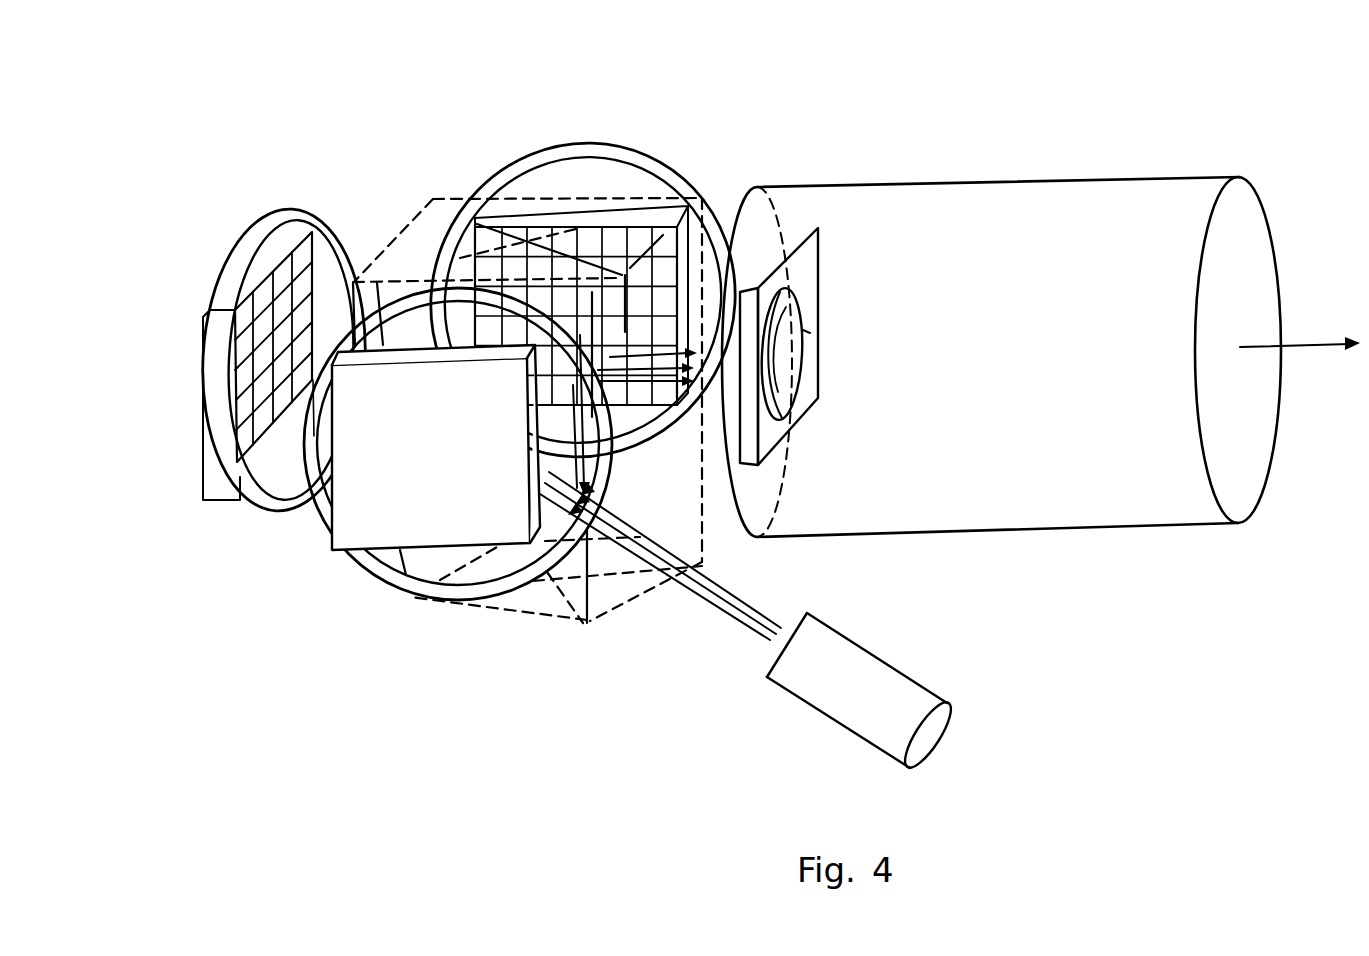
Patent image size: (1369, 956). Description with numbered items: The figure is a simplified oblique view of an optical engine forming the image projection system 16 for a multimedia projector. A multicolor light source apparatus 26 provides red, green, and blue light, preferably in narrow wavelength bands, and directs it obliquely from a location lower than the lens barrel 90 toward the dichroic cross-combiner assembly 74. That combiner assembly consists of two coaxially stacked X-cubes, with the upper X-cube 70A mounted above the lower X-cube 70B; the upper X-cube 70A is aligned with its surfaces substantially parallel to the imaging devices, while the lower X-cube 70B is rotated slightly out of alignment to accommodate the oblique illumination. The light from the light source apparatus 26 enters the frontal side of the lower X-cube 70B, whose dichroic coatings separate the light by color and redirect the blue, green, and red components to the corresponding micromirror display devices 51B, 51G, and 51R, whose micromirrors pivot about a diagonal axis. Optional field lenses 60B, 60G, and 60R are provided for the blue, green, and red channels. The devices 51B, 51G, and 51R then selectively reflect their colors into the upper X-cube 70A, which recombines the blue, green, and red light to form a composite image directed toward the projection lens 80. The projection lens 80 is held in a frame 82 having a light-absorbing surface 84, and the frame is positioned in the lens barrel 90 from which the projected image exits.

The image projection system 16 is at (752, 120).
The light source apparatus 26 is at (893, 680).
The MDD (blue) 51B is at (454, 467).
The MDD (green) 51G is at (203, 488).
The MDD (red) 51R is at (507, 222).
The field lens (blue) 60B is at (370, 567).
The field lens (green) 60G is at (248, 237).
The field lens (red) 60R is at (583, 150).
The X-cube 70A is at (400, 234).
The X-cube 70B is at (618, 593).
The dichroic cross-combiner assembly 74 is at (620, 778).
The projection lens 80 is at (778, 313).
The frame 82 is at (810, 333).
The light-absorbing surface 84 is at (795, 232).
The lens barrel 90 is at (1117, 194).